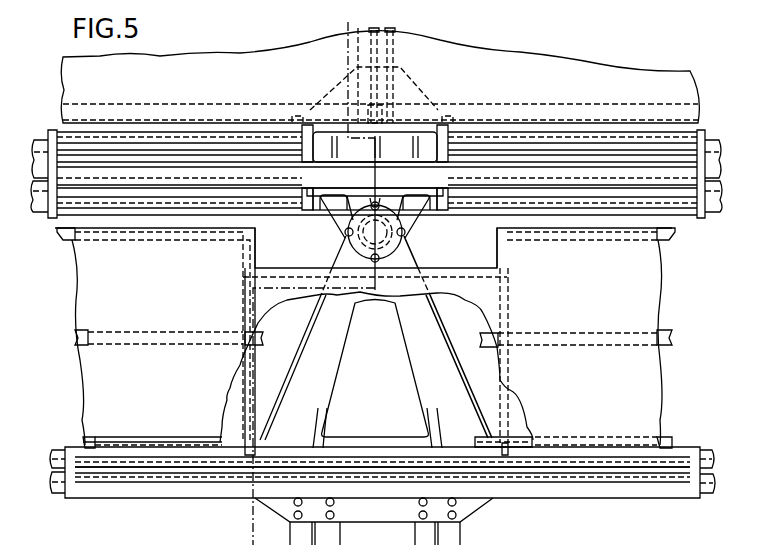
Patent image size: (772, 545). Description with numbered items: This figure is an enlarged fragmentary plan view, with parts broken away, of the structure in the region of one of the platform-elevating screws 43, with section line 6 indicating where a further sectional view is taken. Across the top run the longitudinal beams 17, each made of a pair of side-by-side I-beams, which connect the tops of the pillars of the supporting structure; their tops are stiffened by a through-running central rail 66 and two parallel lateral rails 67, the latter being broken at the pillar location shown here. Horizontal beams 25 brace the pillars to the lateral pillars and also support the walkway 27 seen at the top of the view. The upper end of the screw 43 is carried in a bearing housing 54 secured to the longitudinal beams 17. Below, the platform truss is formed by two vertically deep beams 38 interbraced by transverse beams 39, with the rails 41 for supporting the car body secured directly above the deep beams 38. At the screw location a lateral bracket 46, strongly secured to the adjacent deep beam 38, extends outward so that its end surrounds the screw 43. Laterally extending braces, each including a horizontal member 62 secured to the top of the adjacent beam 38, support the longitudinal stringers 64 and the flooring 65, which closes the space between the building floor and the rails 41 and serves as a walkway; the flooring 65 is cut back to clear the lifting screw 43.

The section line 6- 6 is at (345, 25).
The longitudinal beams 17 is at (34, 152).
The horizontal beams 25 is at (394, 34).
The walkway 27 is at (623, 78).
The vertically deep beams 38 is at (714, 466).
The transverse beams 39 is at (290, 533).
The rails 41 is at (672, 470).
The screws 43 is at (344, 241).
The lateral bracket 46 is at (440, 338).
The bearing housing 54 is at (408, 243).
The horizontal member 62 is at (256, 367).
The longitudinal stringers 64 is at (72, 243).
The flooring 65 is at (612, 283).
The central rail 66 is at (507, 186).
The lateral rails 67 is at (70, 146).